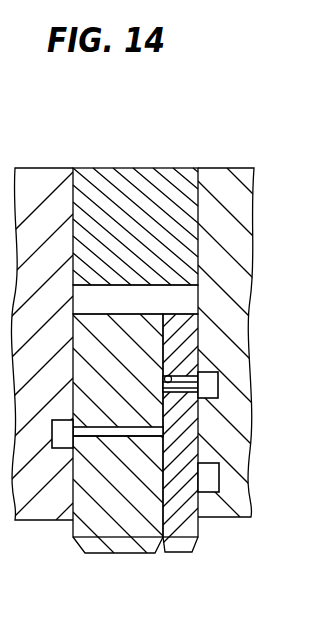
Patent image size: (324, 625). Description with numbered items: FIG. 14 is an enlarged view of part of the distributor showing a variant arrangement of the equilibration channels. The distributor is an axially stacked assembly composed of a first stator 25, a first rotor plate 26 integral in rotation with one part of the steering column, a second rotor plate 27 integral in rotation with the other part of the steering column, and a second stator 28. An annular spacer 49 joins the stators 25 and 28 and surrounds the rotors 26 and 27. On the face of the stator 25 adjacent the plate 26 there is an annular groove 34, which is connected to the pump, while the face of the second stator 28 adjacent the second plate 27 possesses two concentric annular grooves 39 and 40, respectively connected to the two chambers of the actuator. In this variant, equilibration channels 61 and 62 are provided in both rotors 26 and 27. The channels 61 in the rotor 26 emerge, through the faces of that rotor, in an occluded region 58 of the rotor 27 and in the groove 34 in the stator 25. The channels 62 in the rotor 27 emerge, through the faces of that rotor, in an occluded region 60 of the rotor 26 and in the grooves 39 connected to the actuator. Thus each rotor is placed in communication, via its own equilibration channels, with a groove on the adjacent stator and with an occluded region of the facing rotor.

The first stator 25 is at (37, 168).
The second stator 28 is at (227, 168).
The annular spacer 49 is at (128, 168).
The first rotor plate 26 is at (120, 527).
The second rotor plate 27 is at (182, 515).
The annular groove 34 is at (53, 420).
The annular groove 39 is at (218, 390).
The annular groove 40 is at (212, 480).
The occluded region 58 is at (158, 436).
The occluded region 60 is at (168, 382).
The equilibration channels 61 is at (106, 433).
The equilibration channels 62 is at (170, 390).